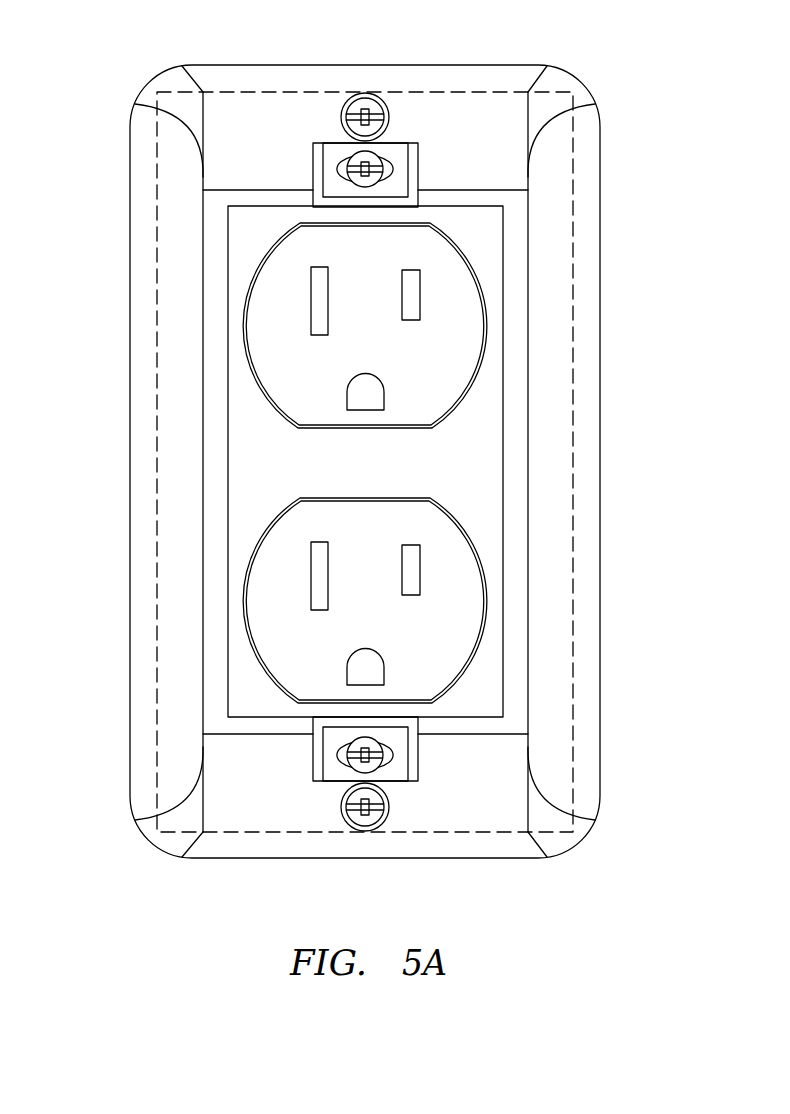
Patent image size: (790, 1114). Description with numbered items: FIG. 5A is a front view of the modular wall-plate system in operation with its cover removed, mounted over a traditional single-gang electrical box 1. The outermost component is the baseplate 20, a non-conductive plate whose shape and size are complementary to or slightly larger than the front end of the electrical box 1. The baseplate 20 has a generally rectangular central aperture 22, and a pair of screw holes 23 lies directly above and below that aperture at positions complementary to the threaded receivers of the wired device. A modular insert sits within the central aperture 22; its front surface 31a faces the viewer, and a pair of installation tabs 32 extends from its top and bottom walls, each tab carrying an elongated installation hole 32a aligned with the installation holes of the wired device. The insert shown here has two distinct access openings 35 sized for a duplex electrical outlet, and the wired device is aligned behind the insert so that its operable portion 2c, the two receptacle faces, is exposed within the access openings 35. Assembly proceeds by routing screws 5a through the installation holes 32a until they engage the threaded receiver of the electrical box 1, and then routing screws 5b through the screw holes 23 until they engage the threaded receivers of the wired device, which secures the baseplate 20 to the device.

The single-gang electrical box 1 is at (580, 147).
The baseplate 20 is at (122, 343).
The central aperture 22 is at (504, 526).
The screw holes 23 is at (371, 95).
The front surface 31a is at (494, 247).
The installation tabs 32 is at (397, 187).
The elongated installation hole 32a is at (420, 153).
The access openings 35 is at (254, 381).
The operable portion 2c is at (445, 393).
The screw 5a is at (360, 162).
The screw 5b is at (357, 101).